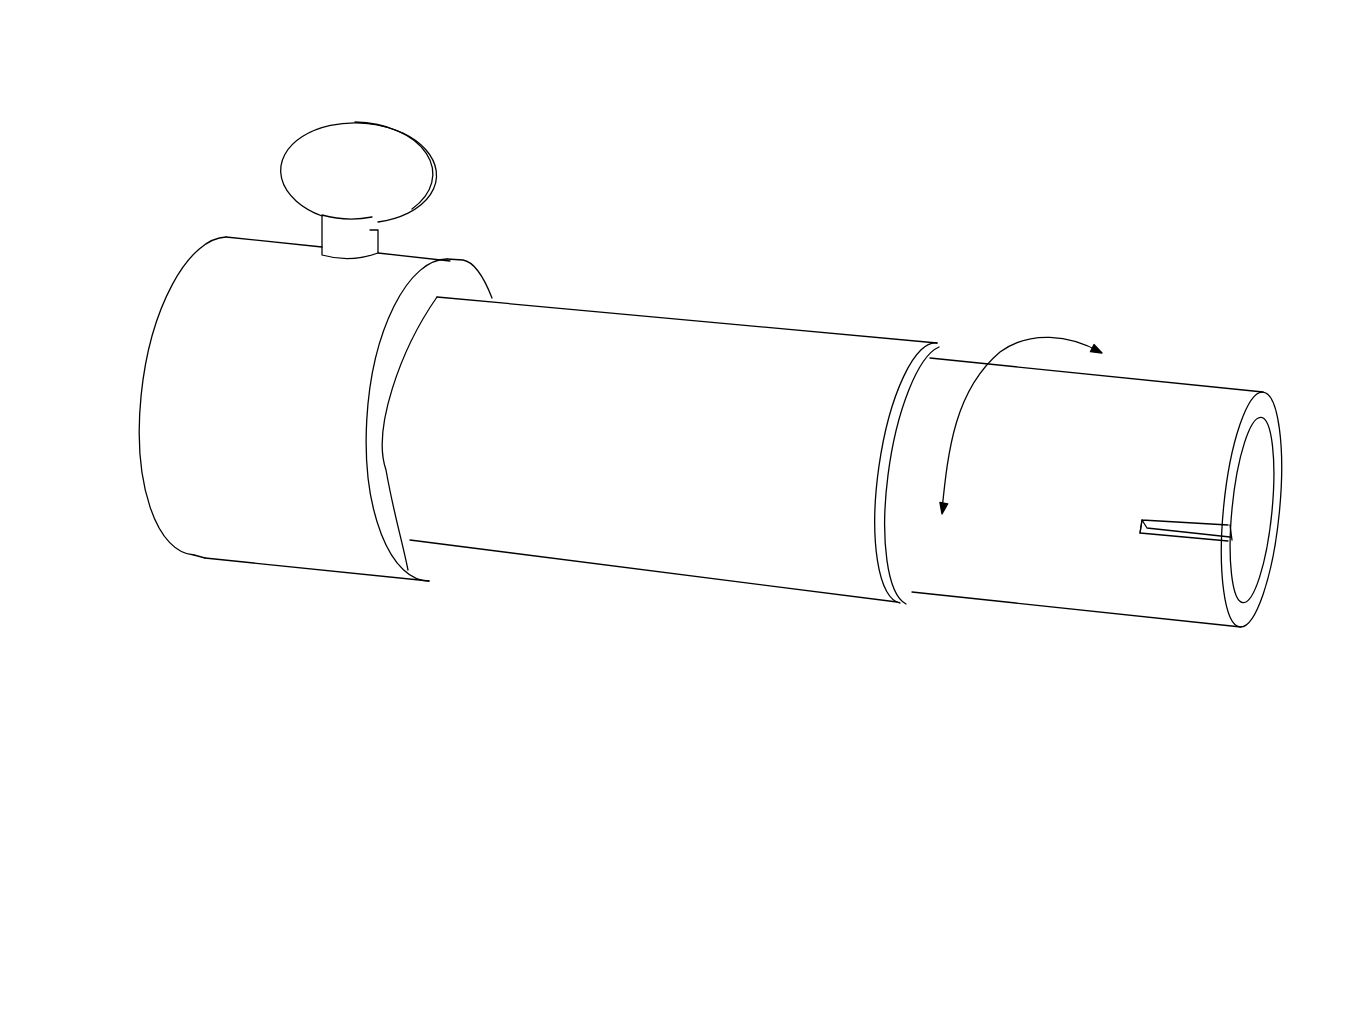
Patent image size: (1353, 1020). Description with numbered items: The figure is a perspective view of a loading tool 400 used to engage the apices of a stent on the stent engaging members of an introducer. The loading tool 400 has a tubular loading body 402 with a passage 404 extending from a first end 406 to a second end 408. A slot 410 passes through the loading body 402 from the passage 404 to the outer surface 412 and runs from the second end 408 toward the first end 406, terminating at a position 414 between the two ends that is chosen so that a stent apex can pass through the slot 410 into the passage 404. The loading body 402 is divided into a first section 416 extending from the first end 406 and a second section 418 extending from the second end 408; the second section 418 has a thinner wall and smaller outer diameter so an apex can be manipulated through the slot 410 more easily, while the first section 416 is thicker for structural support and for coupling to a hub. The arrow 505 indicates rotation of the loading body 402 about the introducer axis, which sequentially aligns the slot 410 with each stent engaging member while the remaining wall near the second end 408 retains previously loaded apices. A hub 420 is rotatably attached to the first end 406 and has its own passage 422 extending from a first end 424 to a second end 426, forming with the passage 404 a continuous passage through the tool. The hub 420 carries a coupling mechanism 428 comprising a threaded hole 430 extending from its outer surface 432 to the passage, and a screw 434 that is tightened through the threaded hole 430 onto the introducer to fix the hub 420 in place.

The loading tool 400 is at (1013, 208).
The loading body 402 is at (958, 375).
The passage 404 is at (1258, 504).
The first end 406 is at (432, 308).
The second end 408 is at (1263, 407).
The slot 410 is at (1192, 523).
The outer surface 412 is at (1123, 610).
The position 414 is at (1140, 520).
The first section 416 is at (585, 515).
The second section 418 is at (1003, 553).
The hub 420 is at (195, 302).
The passage 422 is at (140, 337).
The first end 424 is at (165, 523).
The second end 426 is at (410, 560).
The coupling mechanism 428 is at (362, 99).
The threaded hole 430 is at (318, 244).
The outer surface 432 is at (245, 557).
The screw 434 is at (420, 162).
The arrow 505 is at (1060, 333).